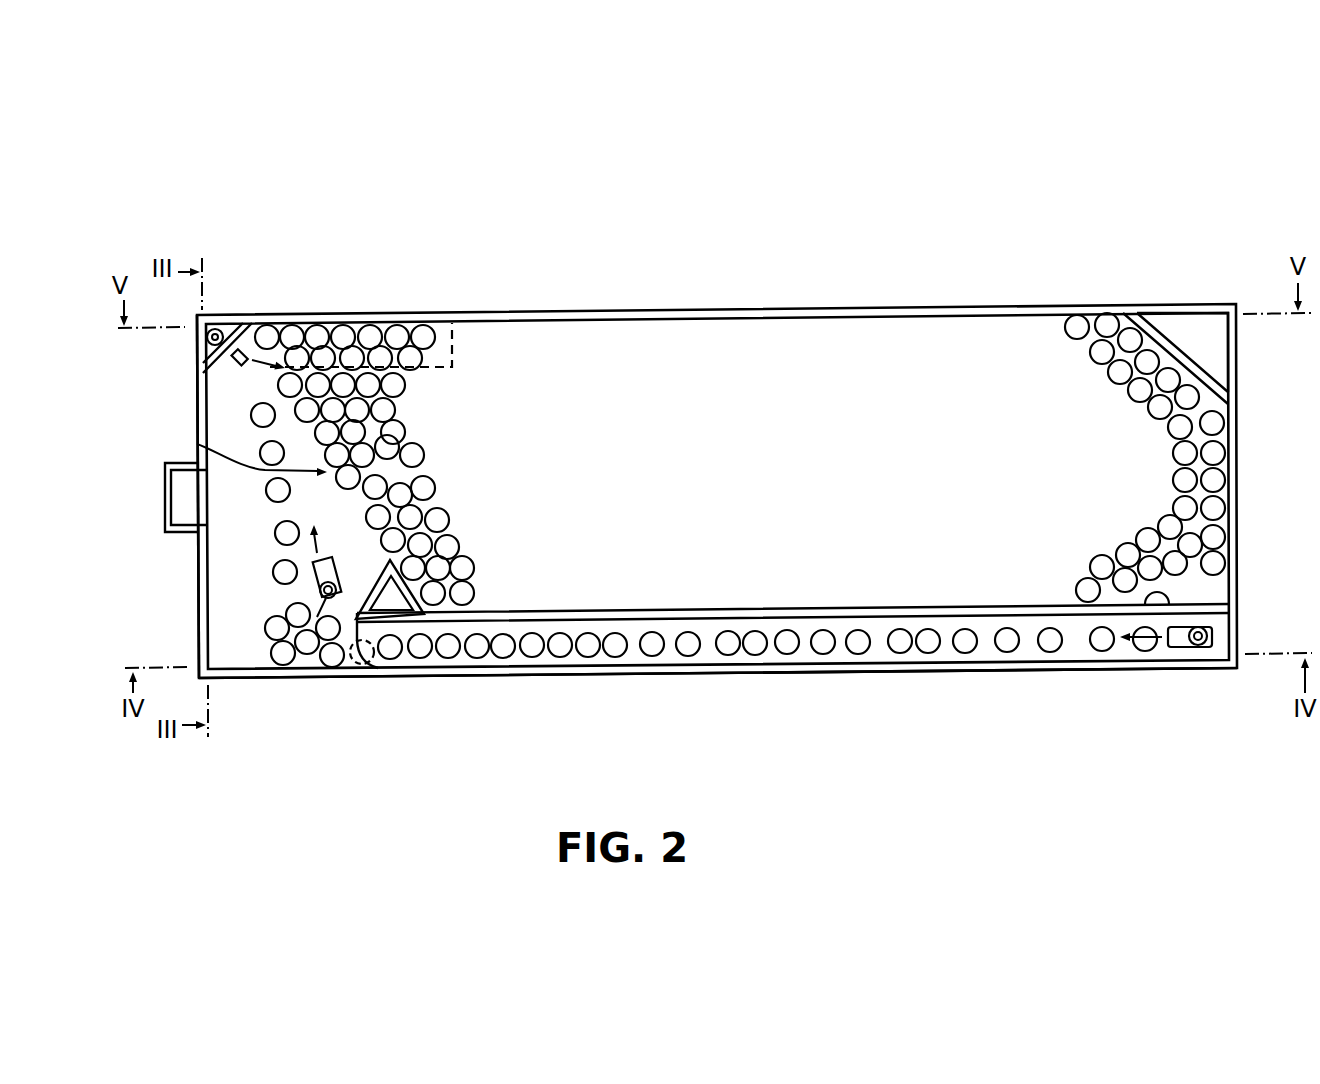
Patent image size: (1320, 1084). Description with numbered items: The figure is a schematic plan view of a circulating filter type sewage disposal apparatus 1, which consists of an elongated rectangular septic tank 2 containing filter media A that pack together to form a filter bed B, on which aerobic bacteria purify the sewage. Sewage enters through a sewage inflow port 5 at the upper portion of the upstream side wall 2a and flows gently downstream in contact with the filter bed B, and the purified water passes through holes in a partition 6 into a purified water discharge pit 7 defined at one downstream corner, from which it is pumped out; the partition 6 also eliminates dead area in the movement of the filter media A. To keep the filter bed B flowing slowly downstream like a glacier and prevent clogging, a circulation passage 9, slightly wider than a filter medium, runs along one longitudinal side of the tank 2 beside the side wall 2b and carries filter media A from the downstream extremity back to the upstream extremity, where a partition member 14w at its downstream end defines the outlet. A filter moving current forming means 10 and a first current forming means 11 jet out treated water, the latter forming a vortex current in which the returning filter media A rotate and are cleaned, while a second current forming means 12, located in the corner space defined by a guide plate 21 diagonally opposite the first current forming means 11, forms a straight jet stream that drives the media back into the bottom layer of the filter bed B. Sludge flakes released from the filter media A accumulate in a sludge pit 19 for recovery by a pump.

The circulating filter type sewage disposal apparatus 1 is at (925, 262).
The septic tank 2 is at (770, 312).
The upstream side wall 2a is at (195, 423).
The side wall 2b is at (592, 612).
The sewage inflow port 5 is at (175, 500).
The partition 6 is at (1165, 345).
The purified water discharge pit 7 is at (1207, 357).
The circulation passage 9 is at (878, 648).
The filter moving current forming means 10 is at (1192, 647).
The first current forming means 11 is at (326, 680).
The second current forming means 12 is at (217, 327).
The partition member 14w is at (388, 658).
The sludge pit 19 is at (240, 358).
The guide plate 21 is at (240, 330).
The filter media A is at (421, 330).
The filter bed B is at (197, 444).